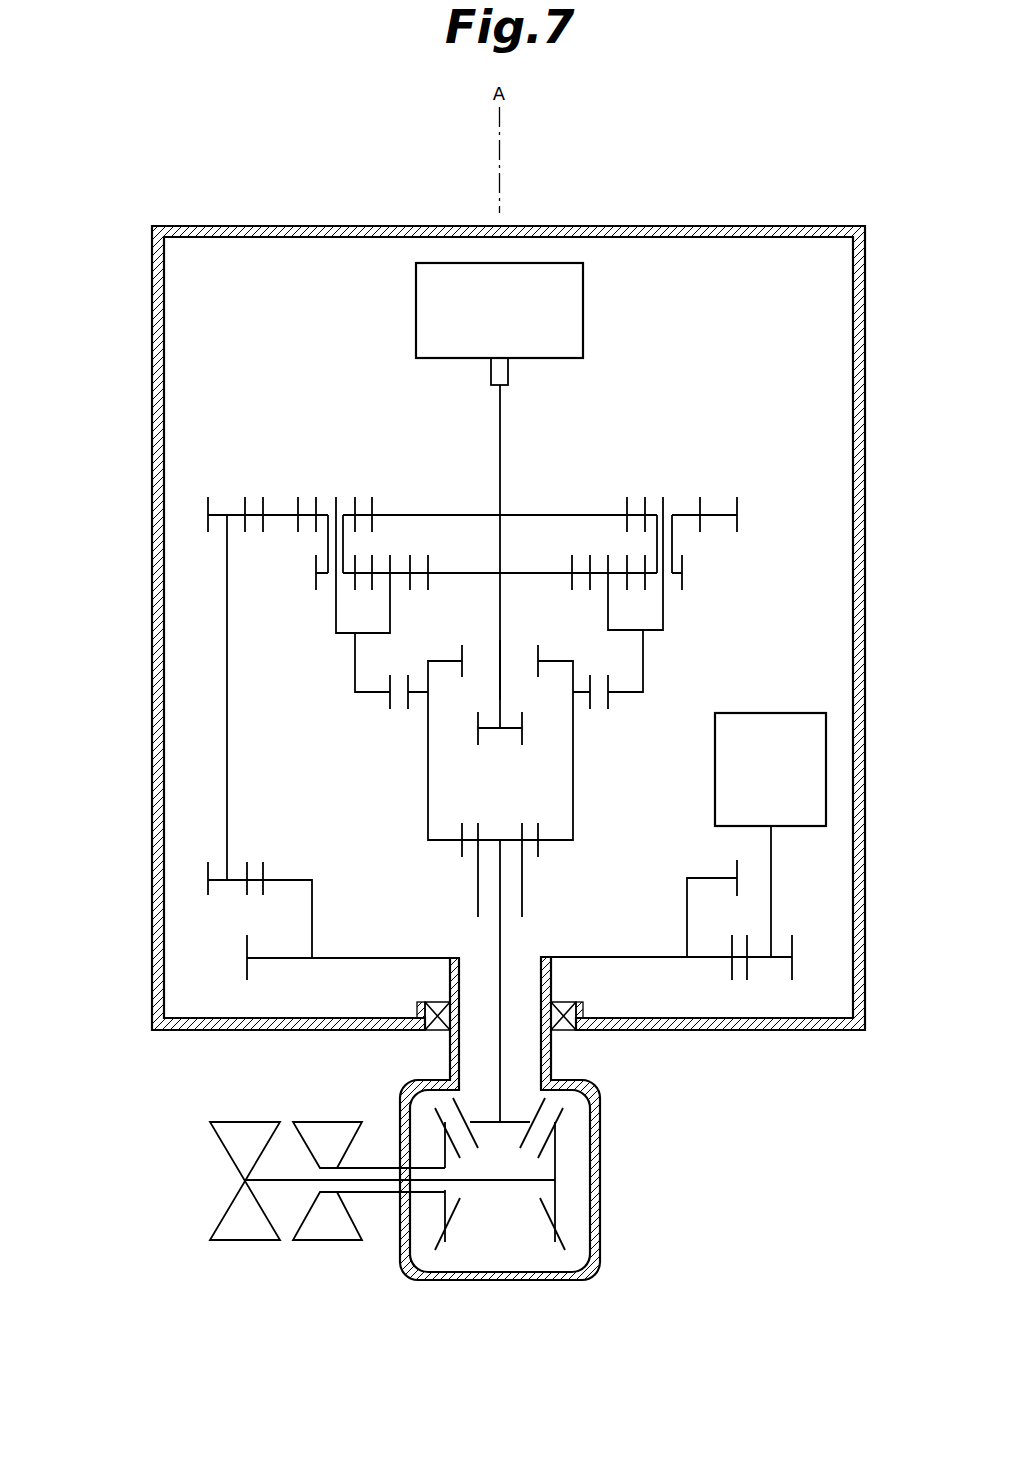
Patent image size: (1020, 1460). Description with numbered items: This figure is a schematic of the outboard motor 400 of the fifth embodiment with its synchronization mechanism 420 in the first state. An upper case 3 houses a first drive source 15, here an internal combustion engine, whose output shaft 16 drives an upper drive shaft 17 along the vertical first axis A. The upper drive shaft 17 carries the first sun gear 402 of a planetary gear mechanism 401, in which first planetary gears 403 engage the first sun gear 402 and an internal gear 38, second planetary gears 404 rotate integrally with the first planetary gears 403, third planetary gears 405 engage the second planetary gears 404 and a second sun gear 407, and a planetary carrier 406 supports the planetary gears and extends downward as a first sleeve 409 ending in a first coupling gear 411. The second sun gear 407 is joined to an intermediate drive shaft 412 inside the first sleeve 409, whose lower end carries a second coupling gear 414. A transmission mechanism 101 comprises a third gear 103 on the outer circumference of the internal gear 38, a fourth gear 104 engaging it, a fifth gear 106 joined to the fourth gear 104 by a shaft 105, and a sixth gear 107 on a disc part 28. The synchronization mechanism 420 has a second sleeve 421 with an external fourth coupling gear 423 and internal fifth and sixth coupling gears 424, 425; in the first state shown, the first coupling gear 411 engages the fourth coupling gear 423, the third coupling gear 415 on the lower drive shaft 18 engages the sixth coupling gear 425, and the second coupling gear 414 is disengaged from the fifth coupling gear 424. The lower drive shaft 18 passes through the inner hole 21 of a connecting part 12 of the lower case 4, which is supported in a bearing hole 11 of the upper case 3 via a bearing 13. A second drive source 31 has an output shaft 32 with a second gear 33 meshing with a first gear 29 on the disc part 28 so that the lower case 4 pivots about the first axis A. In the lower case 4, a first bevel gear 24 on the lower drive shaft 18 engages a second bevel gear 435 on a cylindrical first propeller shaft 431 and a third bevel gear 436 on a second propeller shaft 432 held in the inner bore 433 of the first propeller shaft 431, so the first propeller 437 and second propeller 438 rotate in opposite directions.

The outboard motor 400 is at (226, 208).
The upper case 3 is at (778, 226).
The first drive source 15 is at (557, 262).
The output shaft 16 is at (508, 372).
The upper drive shaft 17 is at (500, 413).
The planetary gear mechanism 401 is at (315, 424).
The first sun gear 402 is at (443, 515).
The first planetary gears 403 is at (360, 500).
The internal gear 38 is at (308, 500).
The third gear 103 is at (252, 500).
The fourth gear 104 is at (215, 505).
The shaft 105 is at (226, 630).
The transmission mechanism 101 is at (222, 739).
The second planetary gears 404 is at (318, 558).
The third planetary gears 405 is at (412, 580).
The second sun gear 407 is at (474, 573).
The first sleeve 409 is at (355, 665).
The planetary carrier 406 is at (666, 636).
The first coupling gear 411 is at (393, 710).
The fourth coupling gear 423 is at (592, 710).
The fifth coupling gear 424 is at (538, 655).
The intermediate drive shaft 412 is at (500, 672).
The second coupling gear 414 is at (480, 730).
The synchronization mechanism 420 is at (578, 809).
The second sleeve 421 is at (573, 826).
The sixth coupling gear 425 is at (463, 858).
The third coupling gear 415 is at (524, 885).
The fifth gear 106 is at (210, 880).
The sixth gear 107 is at (262, 862).
The disc part 28 is at (277, 960).
The lower drive shaft 18 is at (498, 955).
The second drive source 31 is at (780, 713).
The output shaft 32 is at (772, 907).
The connecting part 12 is at (551, 980).
The first gear 29 is at (735, 982).
The second gear 33 is at (795, 982).
The bearing hole 11 is at (440, 1030).
The bearing 13 is at (562, 1030).
The inner hole 21 is at (551, 1064).
The first bevel gear 24 is at (548, 1106).
The lower case 4 is at (585, 1280).
The second propeller shaft 432 is at (495, 1182).
The second bevel gear 435 is at (436, 1243).
The third bevel gear 436 is at (555, 1243).
The first propeller shaft 431 is at (372, 1195).
The inner bore 433 is at (320, 1188).
The first propeller 437 is at (327, 1237).
The second propeller 438 is at (233, 1233).